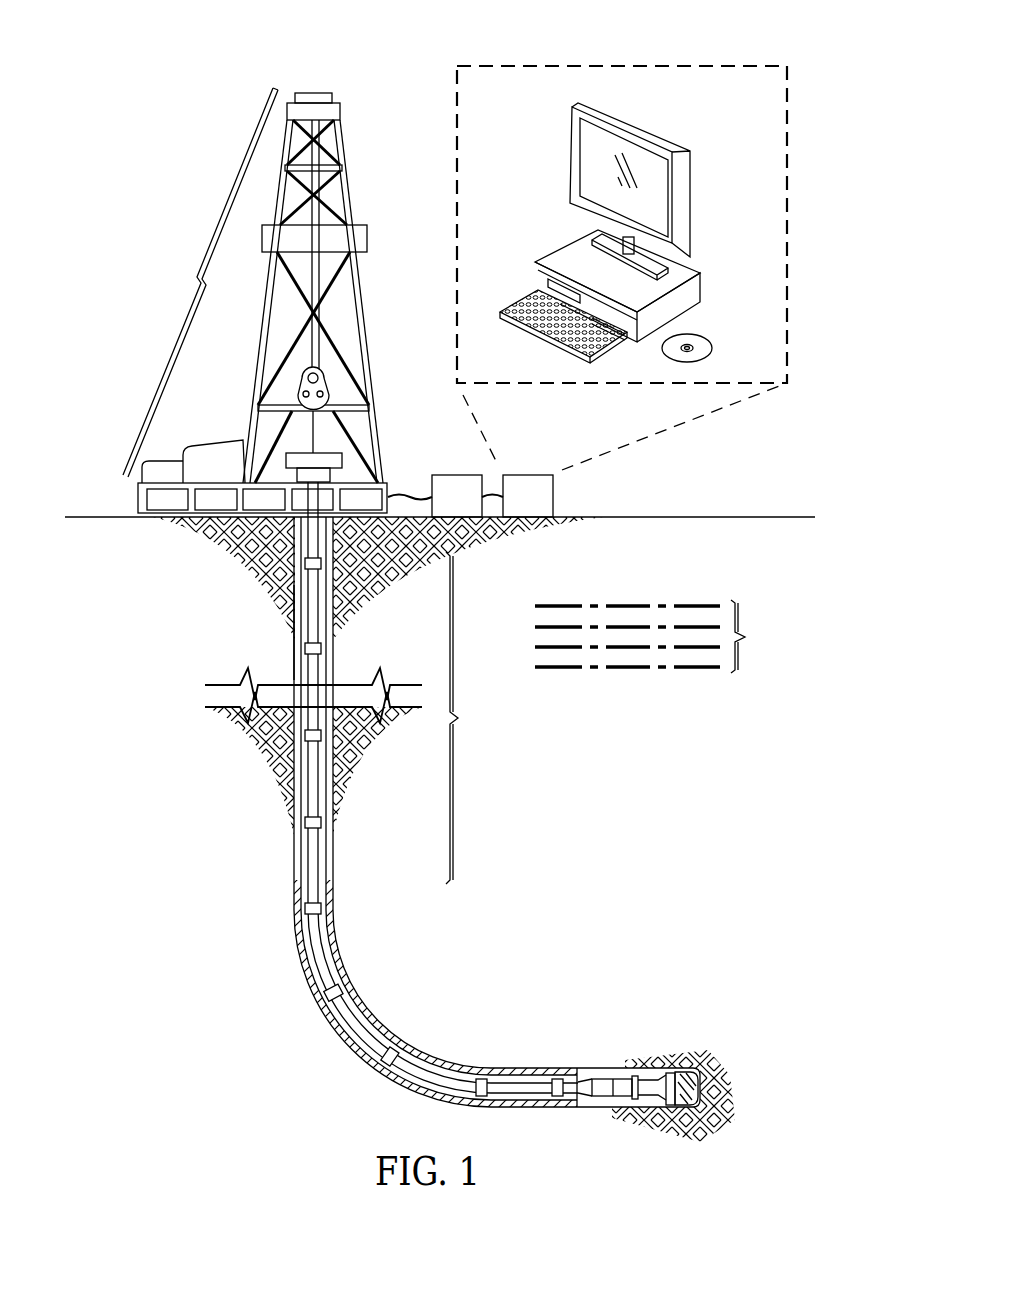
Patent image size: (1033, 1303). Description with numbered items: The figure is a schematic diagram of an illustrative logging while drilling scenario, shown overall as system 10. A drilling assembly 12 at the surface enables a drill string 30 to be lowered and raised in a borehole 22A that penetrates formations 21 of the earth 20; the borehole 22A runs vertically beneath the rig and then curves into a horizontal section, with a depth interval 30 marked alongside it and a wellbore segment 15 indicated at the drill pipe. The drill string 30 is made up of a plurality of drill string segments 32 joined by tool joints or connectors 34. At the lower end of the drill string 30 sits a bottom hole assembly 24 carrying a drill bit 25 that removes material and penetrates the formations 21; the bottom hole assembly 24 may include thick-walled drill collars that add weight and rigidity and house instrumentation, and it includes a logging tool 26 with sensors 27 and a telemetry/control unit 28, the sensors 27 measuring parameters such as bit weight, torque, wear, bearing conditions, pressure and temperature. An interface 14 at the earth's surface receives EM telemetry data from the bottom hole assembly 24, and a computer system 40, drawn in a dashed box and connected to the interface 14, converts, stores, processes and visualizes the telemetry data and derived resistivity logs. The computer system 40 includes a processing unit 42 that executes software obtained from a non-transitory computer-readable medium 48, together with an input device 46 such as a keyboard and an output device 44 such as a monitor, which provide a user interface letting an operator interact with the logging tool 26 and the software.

The drilling system 10 is at (183, 112).
The drilling assembly 12 is at (197, 280).
The interface 14 is at (457, 475).
The drill string 15 is at (441, 789).
The earth 20 is at (380, 556).
The formations 21 is at (655, 636).
The borehole 22A is at (292, 807).
The bottom hole assembly 24 is at (656, 1068).
The drill bit 25 is at (695, 1054).
The logging tool 26 is at (620, 1078).
The sensors 27 is at (653, 1097).
The telemetry/control unit 28 is at (603, 1098).
The drill string 30 is at (468, 718).
The drill string segments 32 is at (307, 595).
The tool joints or connectors 34 is at (323, 650).
The computer system 40 is at (622, 237).
The processing unit 42 is at (570, 257).
The output device 44 is at (638, 125).
The input device 46 is at (522, 297).
The non-transitory computer-readable medium 48 is at (713, 346).